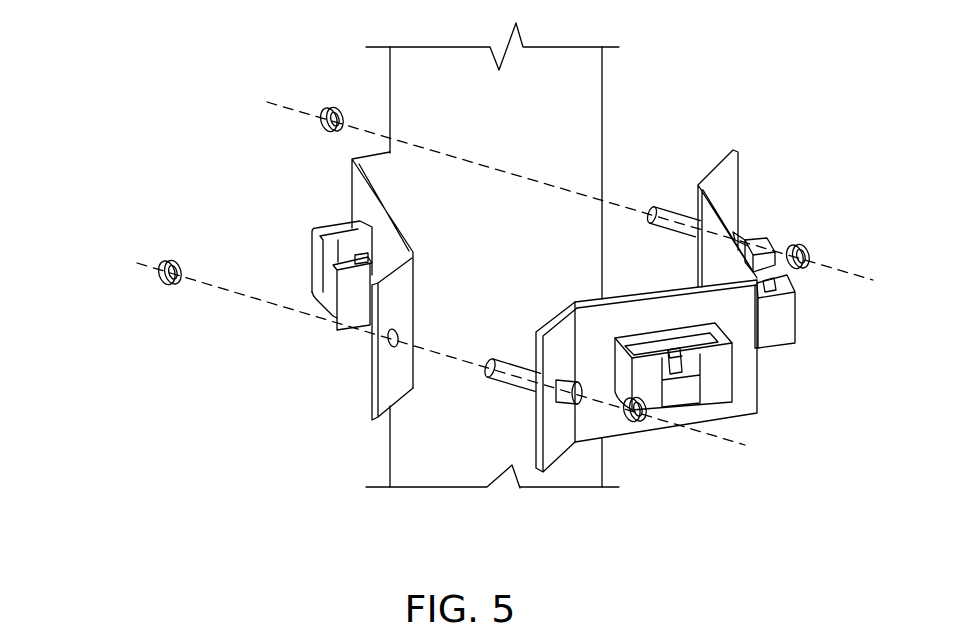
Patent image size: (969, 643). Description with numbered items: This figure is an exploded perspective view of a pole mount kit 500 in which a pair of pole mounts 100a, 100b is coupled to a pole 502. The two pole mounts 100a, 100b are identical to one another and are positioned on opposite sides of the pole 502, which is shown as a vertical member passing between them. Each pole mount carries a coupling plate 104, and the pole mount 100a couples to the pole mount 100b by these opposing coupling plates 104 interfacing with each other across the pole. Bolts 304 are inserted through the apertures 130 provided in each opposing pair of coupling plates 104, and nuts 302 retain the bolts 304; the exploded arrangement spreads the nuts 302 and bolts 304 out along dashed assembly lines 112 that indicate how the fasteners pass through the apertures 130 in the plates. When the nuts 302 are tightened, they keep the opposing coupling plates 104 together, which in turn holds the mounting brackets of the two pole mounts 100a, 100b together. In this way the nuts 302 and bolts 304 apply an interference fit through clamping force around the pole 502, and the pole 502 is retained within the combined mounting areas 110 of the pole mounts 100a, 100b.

The pole mount kit 500 is at (125, 122).
The pole 502 is at (403, 63).
The mounting area 110 is at (620, 228).
The fastener axis 112 is at (243, 305).
The pole mount 100a is at (297, 213).
The pole mount 100b is at (812, 362).
The coupling plate 104 is at (372, 417).
The aperture 130 is at (385, 342).
The nut 302 is at (325, 110).
The bolt 304 is at (500, 380).